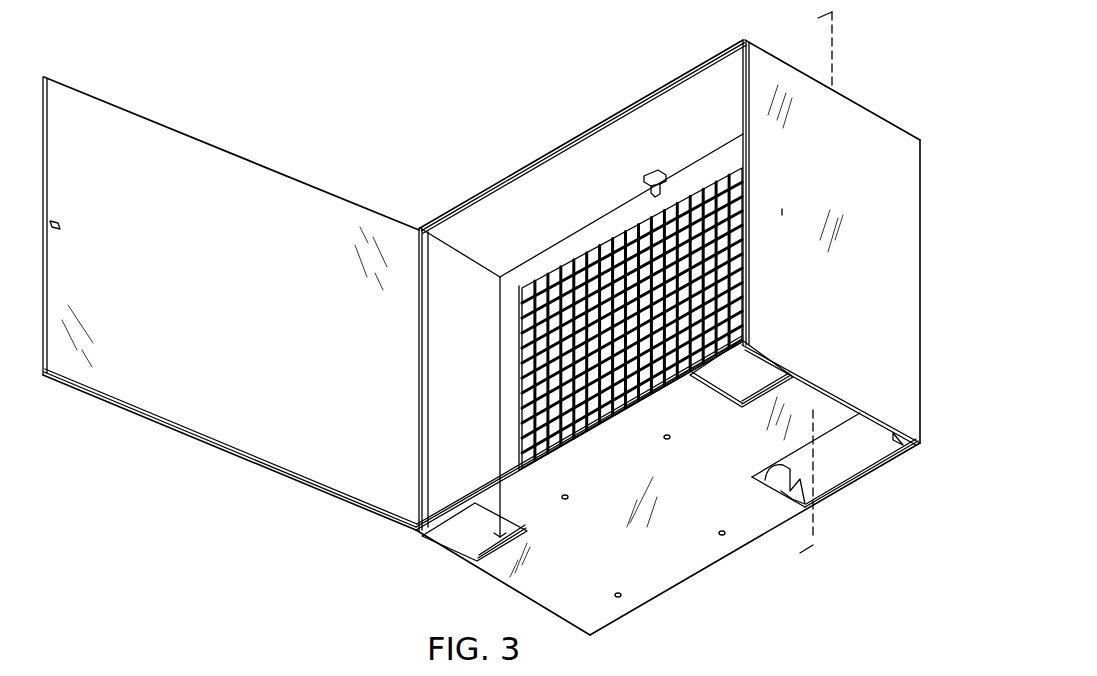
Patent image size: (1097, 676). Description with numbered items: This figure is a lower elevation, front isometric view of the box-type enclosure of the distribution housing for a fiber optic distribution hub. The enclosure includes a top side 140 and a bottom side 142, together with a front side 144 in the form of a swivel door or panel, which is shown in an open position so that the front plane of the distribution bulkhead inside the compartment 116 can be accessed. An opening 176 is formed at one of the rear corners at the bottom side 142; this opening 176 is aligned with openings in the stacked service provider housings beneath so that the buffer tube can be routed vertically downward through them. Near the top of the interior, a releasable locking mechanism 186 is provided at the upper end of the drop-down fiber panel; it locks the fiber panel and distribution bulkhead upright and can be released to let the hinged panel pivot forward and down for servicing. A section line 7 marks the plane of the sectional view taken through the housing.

The housing interior 116 is at (540, 226).
The top side 140 is at (600, 114).
The bottom side 142 is at (692, 575).
The front side 144 is at (196, 178).
The opening 176 is at (863, 452).
The releasable locking mechanism 186 is at (655, 165).
The section line 7- 7 is at (812, 22).